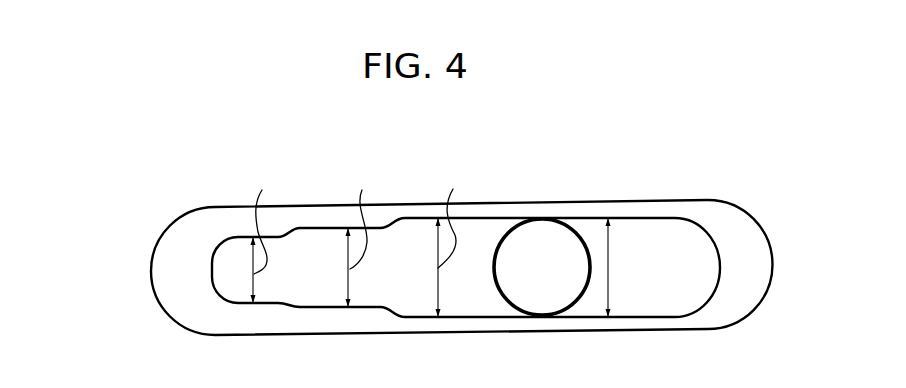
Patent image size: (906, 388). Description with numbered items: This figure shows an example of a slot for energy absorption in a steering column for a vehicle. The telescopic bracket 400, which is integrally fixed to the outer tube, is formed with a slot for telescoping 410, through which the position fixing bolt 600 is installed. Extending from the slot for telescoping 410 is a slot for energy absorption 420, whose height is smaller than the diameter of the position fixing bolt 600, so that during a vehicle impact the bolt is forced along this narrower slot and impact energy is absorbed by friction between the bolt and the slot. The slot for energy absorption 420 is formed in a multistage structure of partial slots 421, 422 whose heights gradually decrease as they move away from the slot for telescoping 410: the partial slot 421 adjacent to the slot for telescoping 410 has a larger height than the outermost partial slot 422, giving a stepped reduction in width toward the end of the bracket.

The telescopic bracket 400 is at (703, 213).
The slot for telescoping 410 is at (670, 268).
The slot for energy absorption 420 is at (220, 271).
The partial slot 421 is at (313, 276).
The partial slot 422 is at (239, 255).
The position fixing bolt 600 is at (542, 240).